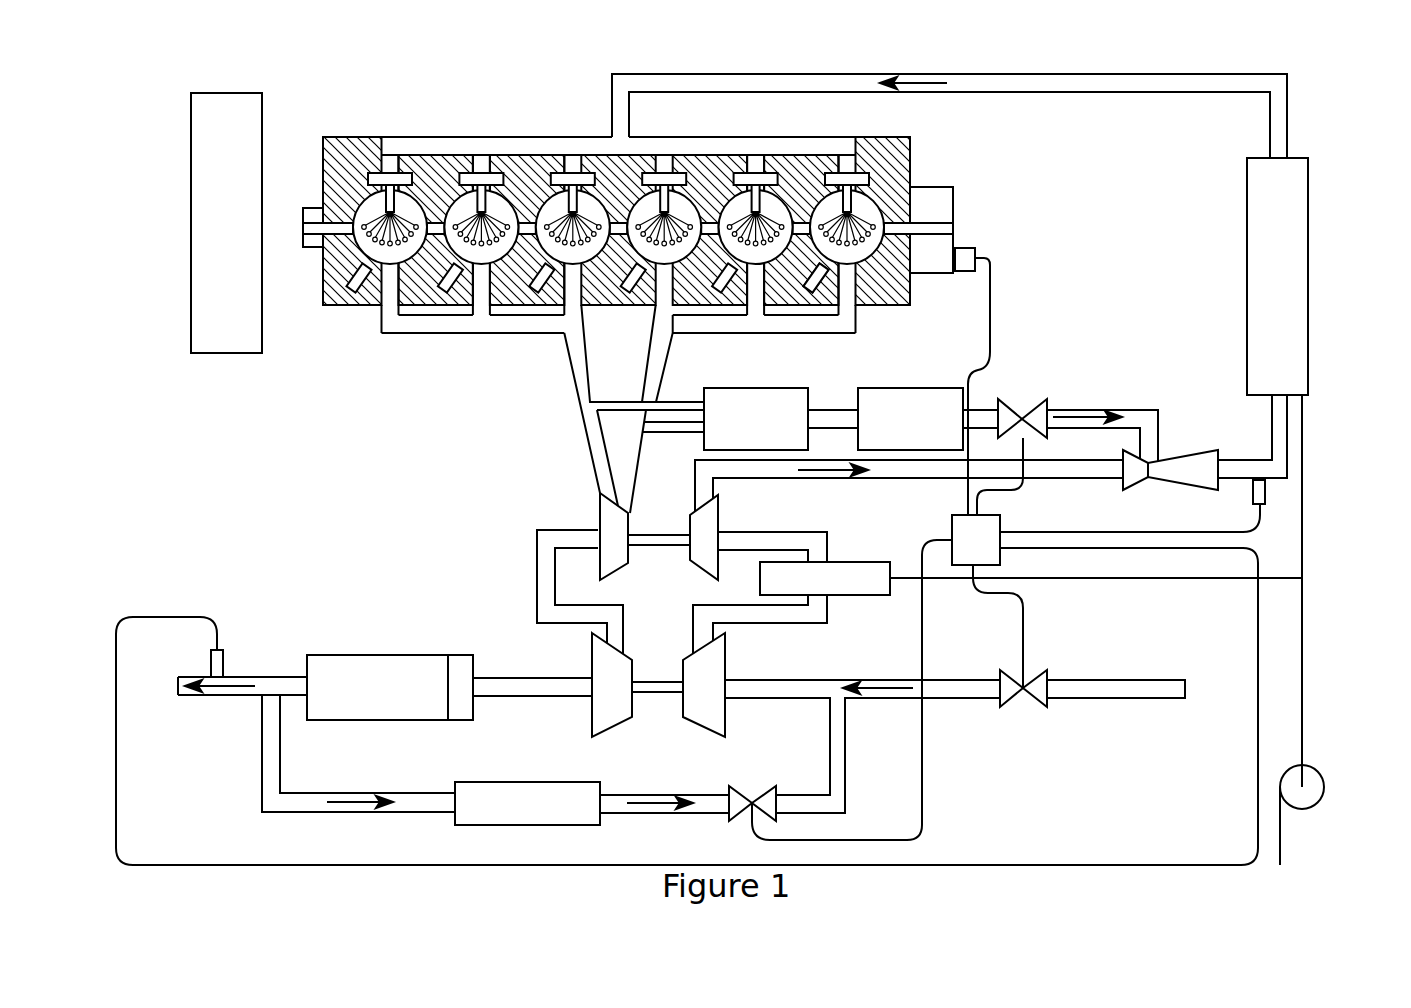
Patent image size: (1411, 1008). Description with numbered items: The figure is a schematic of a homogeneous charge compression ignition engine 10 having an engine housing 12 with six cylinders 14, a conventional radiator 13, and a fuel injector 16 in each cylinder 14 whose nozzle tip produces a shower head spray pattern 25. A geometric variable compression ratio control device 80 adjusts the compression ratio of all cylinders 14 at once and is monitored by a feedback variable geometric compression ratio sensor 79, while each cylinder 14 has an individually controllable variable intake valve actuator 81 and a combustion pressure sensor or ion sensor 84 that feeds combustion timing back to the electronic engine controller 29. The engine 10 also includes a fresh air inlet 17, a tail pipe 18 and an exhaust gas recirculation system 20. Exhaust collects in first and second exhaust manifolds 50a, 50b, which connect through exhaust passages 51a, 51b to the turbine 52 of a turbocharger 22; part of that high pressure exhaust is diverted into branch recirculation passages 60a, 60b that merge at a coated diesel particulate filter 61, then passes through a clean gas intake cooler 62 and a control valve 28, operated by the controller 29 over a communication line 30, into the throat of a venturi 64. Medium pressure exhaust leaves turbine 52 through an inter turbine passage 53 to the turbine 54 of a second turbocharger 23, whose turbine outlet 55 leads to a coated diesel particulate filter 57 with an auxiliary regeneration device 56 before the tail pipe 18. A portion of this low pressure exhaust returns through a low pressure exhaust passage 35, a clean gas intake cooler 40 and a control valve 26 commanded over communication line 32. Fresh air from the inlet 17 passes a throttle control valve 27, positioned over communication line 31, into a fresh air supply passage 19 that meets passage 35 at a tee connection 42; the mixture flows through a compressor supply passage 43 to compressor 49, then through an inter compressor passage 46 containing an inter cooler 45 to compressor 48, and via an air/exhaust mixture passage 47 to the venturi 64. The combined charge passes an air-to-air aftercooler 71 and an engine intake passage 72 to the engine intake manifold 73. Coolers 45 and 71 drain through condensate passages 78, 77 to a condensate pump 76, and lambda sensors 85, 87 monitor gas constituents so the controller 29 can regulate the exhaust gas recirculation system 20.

The homogeneous charge compression ignition engine 10 is at (330, 92).
The engine housing 12 is at (627, 220).
The radiator 13 is at (262, 353).
The cylinder 14 is at (826, 205).
The fuel injector 16 is at (856, 204).
The fresh air inlet 17 is at (1186, 698).
The tail pipe 18 is at (178, 690).
The fresh air supply passage 19 is at (957, 698).
The exhaust gas recirculation system 20 is at (1113, 242).
The turbocharger 22 is at (638, 596).
The second turbocharger 23 is at (689, 741).
The shower head spray pattern 25 is at (912, 290).
The control valve 26 is at (774, 790).
The throttle control valve 27 is at (1047, 706).
The control valve 28 is at (1047, 400).
The electronic engine controller 29 is at (952, 540).
The communication line 30 is at (1013, 478).
The communication line 31 is at (1025, 628).
The communication line 32 is at (923, 628).
The low pressure exhaust passage 35 is at (358, 812).
The clean gas intake cooler 40 is at (498, 825).
The tee connection 42 is at (843, 680).
The compressor supply passage 43 is at (765, 680).
The inter cooler 45 is at (855, 562).
The inter compressor passage 46 is at (764, 532).
The air/exhaust mixture passage 47 is at (1093, 478).
The compressor 48 is at (720, 567).
The compressor 49 is at (683, 674).
The first exhaust manifold 50a is at (750, 333).
The second exhaust manifold 50b is at (519, 336).
The exhaust passage 51a is at (626, 447).
The exhaust passage 51b is at (574, 397).
The turbine 52 is at (600, 518).
The inter turbine passage 53 is at (538, 566).
The turbine 54 is at (620, 720).
The turbine outlet 55 is at (547, 697).
The auxiliary regeneration device 56 is at (455, 720).
The coated diesel particulate filter 57 is at (350, 655).
The branch recirculation passage 60a is at (665, 437).
The branch recirculation passage 60b is at (623, 400).
The coated diesel particulate filter 61 is at (782, 388).
The clean gas intake cooler 62 is at (918, 388).
The venturi 64 is at (1186, 452).
The air-to-air aftercooler 71 is at (1310, 207).
The engine intake passage 72 is at (1226, 92).
The engine intake manifold 73 is at (645, 139).
The condensate pump 76 is at (1324, 787).
The condensate passage 77 is at (1304, 555).
The condensate passage 78 is at (1226, 579).
The feedback variable geometric compression ratio sensor 79 is at (977, 255).
The geometric variable compression ratio control device 80 is at (953, 212).
The variable intake valve actuator 81 is at (880, 145).
The combustion pressure sensor or ion sensor 84 is at (831, 282).
The lambda sensor 85 is at (1253, 500).
The lambda sensor 87 is at (211, 660).